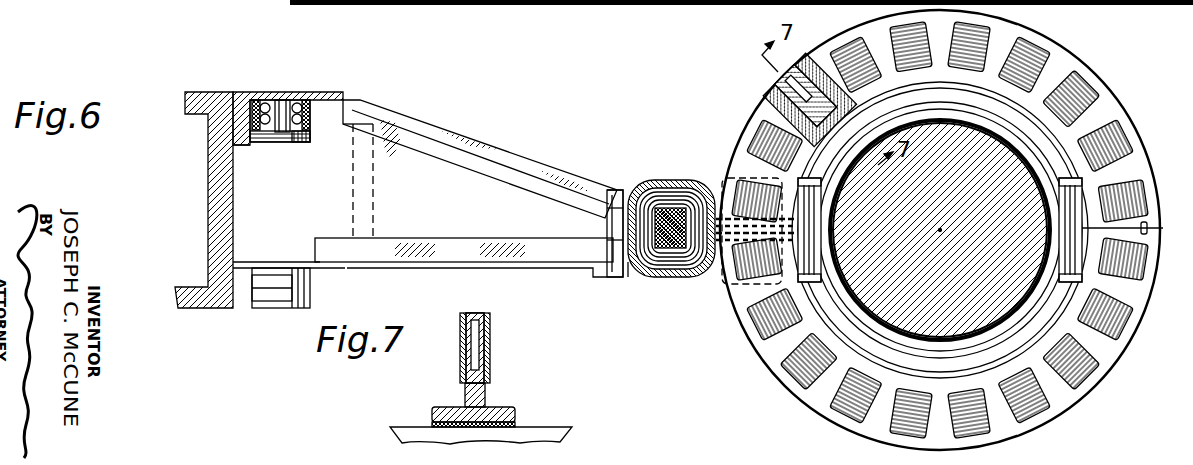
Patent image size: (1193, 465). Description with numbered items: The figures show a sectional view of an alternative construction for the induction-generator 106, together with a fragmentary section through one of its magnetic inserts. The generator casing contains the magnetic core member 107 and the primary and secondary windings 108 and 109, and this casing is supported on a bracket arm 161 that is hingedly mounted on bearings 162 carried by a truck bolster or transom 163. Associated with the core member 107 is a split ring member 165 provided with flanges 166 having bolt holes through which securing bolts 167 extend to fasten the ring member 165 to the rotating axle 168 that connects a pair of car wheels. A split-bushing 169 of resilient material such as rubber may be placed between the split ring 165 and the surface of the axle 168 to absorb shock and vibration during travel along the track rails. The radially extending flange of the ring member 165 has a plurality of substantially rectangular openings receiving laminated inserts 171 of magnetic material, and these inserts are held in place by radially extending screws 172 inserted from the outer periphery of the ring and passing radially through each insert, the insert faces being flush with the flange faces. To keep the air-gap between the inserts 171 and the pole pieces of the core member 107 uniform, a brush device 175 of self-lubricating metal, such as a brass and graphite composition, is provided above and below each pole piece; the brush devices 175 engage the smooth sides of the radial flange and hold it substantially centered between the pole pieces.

In FIG. 6, the induction-generator 106 is at (641, 180).
In FIG. 6, the magnetic core member 107 is at (698, 215).
In FIG. 6, the primary winding 108 is at (662, 205).
In FIG. 6, the secondary winding 109 is at (656, 266).
In FIG. 6, the bracket arm 161 is at (500, 158).
In FIG. 6, the bearings 162 is at (264, 98).
In FIG. 6, the truck bolster or transom 163 is at (229, 189).
In FIG. 6, the split ring member 165 is at (797, 403).
In FIG. 7, the split ring member 165 is at (488, 396).
In FIG. 6, the flanges 166 is at (812, 204).
In FIG. 6, the securing bolts 167 is at (845, 137).
In FIG. 6, the rotating axle 168 is at (1005, 293).
In FIG. 7, the rotating axle 168 is at (537, 435).
In FIG. 6, the split-bushing 169 is at (940, 230).
In FIG. 7, the split-bushing 169 is at (432, 422).
In FIG. 6, the laminated inserts 171 is at (1045, 63).
In FIG. 7, the laminated inserts 171 is at (482, 345).
In FIG. 6, the radially extending screws 172 is at (778, 103).
In FIG. 7, the radially extending screws 172 is at (476, 336).
In FIG. 6, the brush device 175 is at (762, 187).